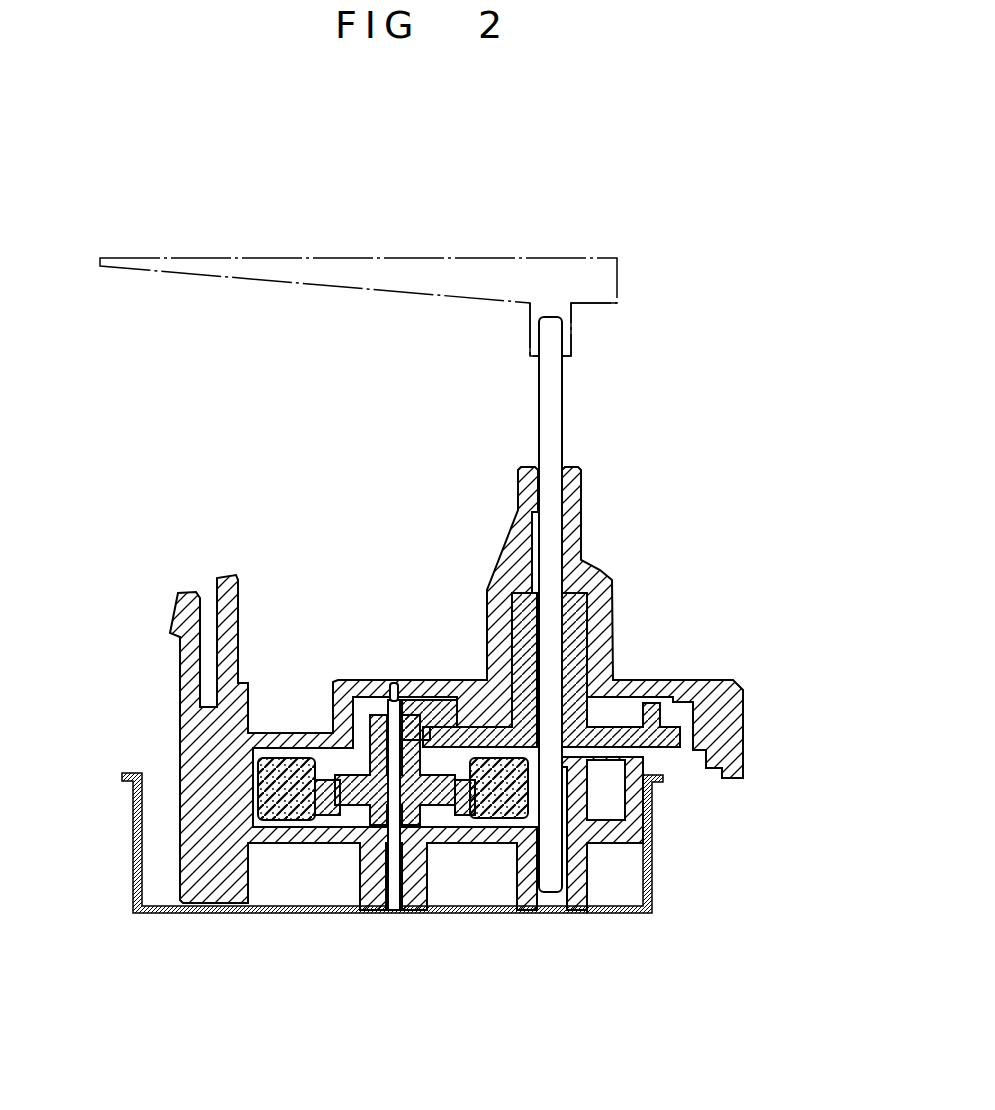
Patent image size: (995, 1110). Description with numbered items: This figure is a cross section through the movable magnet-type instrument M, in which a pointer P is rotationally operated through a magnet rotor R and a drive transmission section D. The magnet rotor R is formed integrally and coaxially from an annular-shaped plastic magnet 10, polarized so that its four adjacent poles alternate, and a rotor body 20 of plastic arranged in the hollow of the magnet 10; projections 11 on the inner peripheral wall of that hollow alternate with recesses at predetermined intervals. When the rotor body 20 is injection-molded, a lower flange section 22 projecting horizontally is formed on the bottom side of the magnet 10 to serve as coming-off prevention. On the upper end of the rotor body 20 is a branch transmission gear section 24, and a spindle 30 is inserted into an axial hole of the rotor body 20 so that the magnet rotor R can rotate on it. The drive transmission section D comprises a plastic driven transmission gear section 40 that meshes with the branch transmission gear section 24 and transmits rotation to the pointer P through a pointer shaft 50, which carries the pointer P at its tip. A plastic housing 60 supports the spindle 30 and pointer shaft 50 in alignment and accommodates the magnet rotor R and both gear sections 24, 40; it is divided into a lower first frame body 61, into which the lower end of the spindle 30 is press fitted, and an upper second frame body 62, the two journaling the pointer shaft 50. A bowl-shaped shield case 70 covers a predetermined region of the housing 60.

The annular-shaped plastic magnet 10 is at (283, 818).
The projections 11 is at (322, 817).
The rotor body 20 is at (362, 795).
The lower flange section 22 is at (443, 803).
The branch transmission gear section 24 is at (328, 733).
The spindle 30 is at (393, 697).
The driven transmission gear section 40 is at (445, 713).
The pointer shaft 50 is at (553, 430).
The housing 60 is at (831, 693).
The first frame body 61 is at (652, 819).
The second frame body 62 is at (698, 687).
The shield case 70 is at (140, 835).
The pointer P is at (383, 265).
The movable magnet-type instrument M is at (668, 458).
The drive transmission section D is at (625, 704).
The magnet rotor R is at (590, 973).